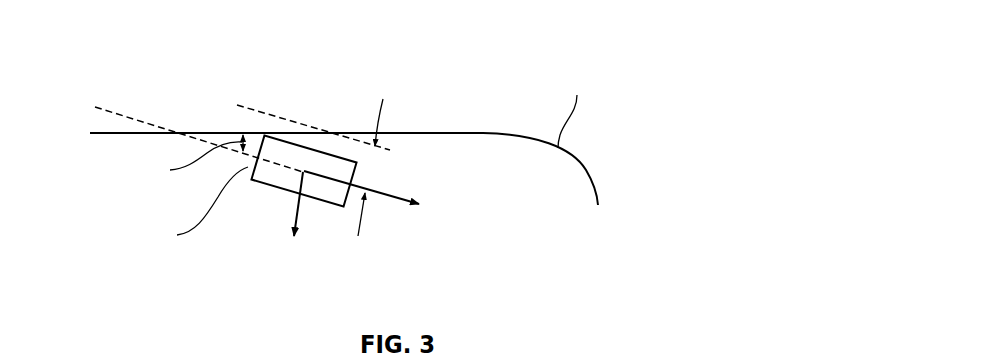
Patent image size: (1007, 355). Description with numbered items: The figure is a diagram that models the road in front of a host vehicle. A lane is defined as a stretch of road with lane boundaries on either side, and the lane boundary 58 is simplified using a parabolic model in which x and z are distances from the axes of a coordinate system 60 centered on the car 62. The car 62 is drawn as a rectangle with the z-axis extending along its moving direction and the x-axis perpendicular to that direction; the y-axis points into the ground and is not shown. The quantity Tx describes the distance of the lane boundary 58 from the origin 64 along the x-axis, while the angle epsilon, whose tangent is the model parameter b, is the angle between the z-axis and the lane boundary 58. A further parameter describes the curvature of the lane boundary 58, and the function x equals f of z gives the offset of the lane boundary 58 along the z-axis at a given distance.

The lane boundary 58 is at (106, 47).
The coordinate system 60 is at (327, 232).
The car 62 is at (302, 173).
The origin 64 is at (302, 173).